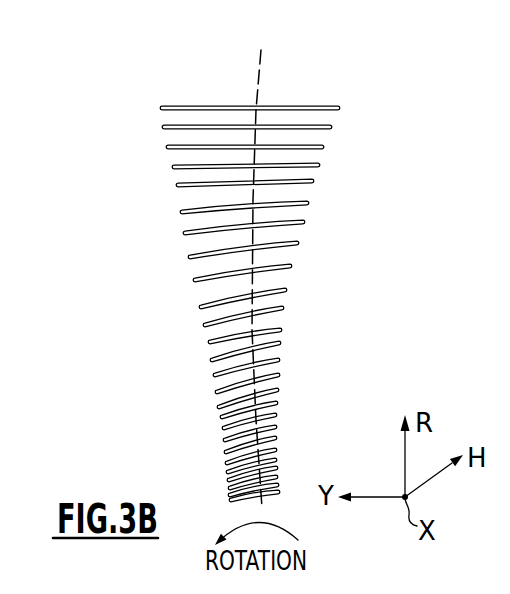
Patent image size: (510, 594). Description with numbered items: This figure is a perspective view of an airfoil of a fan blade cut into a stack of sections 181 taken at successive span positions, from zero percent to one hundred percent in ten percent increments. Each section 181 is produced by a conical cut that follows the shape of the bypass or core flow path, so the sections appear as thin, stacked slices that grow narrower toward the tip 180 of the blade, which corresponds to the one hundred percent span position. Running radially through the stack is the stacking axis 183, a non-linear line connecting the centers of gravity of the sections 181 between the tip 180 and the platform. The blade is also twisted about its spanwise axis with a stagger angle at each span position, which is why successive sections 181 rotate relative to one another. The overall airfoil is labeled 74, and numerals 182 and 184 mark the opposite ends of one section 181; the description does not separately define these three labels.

The coil spring 74 is at (101, 82).
The tip 180 is at (175, 105).
The sections 181 is at (311, 127).
The left side of coil 182 is at (163, 187).
The stacking axis 183 is at (260, 72).
The right side of coil 184 is at (328, 179).